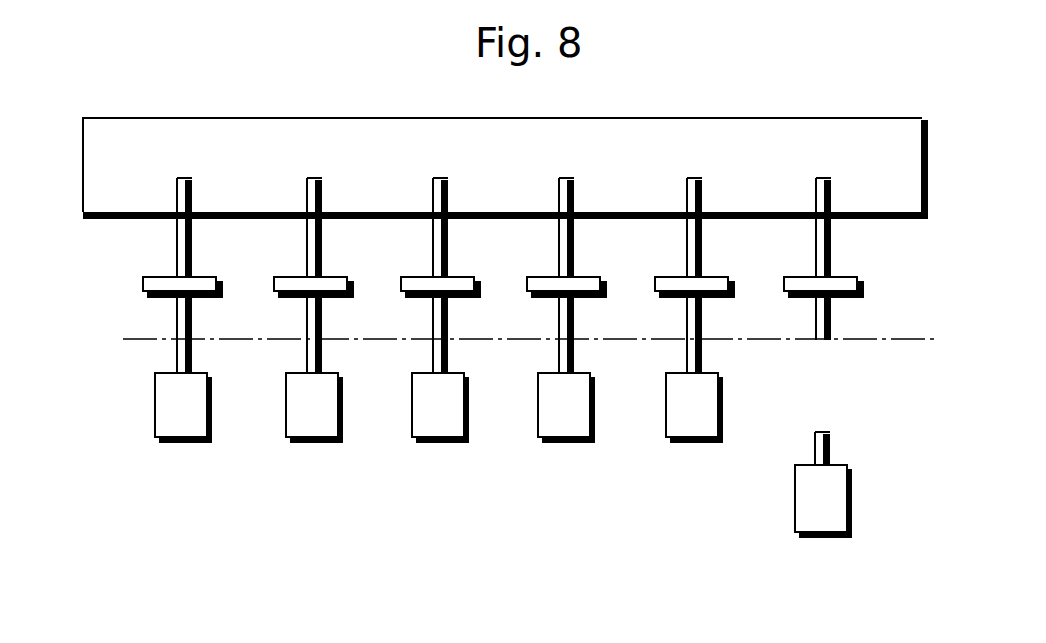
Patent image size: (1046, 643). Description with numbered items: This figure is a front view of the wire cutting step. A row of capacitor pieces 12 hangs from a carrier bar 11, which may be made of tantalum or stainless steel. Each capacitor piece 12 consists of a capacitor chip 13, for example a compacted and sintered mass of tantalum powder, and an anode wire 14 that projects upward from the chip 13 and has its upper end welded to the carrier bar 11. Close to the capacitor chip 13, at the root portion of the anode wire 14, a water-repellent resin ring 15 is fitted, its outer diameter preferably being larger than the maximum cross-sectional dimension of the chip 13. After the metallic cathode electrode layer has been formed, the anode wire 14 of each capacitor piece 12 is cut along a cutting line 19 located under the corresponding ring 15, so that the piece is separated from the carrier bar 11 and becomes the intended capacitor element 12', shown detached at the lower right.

The carrier bar 11 is at (703, 118).
The capacitor piece 12 is at (148, 325).
The capacitor element 12' is at (758, 493).
The capacitor chip 13 is at (185, 423).
The anode wire 14 is at (176, 310).
The water-repellent resin ring 15 is at (143, 283).
The cutting line 19 is at (648, 340).